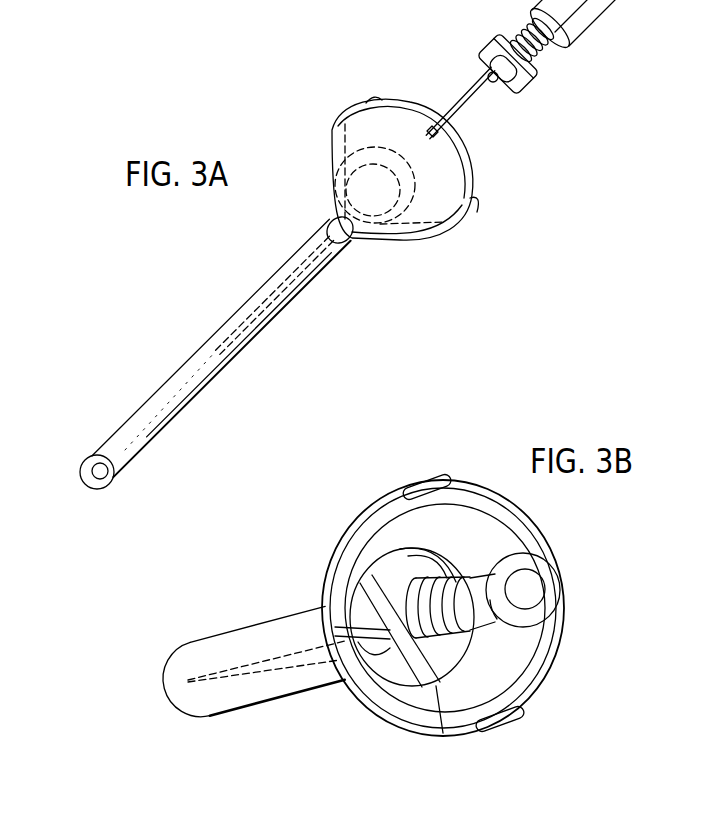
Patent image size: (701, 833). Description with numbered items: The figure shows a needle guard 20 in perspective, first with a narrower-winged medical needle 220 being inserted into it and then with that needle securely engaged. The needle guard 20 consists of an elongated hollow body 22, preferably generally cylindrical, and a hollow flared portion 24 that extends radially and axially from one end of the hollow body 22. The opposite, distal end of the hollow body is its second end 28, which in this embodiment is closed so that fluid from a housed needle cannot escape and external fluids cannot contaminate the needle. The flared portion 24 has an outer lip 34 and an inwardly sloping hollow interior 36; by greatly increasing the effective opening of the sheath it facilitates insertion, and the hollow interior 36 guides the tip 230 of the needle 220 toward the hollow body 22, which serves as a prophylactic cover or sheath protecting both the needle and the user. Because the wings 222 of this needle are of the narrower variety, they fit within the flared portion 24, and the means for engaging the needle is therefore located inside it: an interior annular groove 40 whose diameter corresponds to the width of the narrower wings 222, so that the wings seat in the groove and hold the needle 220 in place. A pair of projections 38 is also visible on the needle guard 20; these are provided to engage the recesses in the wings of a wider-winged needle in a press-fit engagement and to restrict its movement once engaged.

In FIG. 3A, the needle guard 20 is at (205, 266).
In FIG. 3B, the needle guard 20 is at (282, 732).
In FIG. 3A, the elongated hollow body 22 is at (207, 353).
In FIG. 3B, the elongated hollow body 22 is at (210, 655).
In FIG. 3A, the hollow flared portion 24 is at (313, 133).
In FIG. 3A, the second end 28 is at (95, 484).
In FIG. 3B, the second end 28 is at (160, 683).
In FIG. 3B, the outer lip 34 is at (497, 503).
In FIG. 3A, the hollow interior 36 is at (562, 32).
In FIG. 3B, the hollow interior 36 is at (487, 538).
In FIG. 3A, the projections 38 is at (368, 100).
In FIG. 3B, the projections 38 is at (418, 488).
In FIG. 3A, the interior annular groove 40 is at (418, 236).
In FIG. 3B, the interior annular groove 40 is at (443, 738).
In FIG. 3A, the narrower winged needle 220 is at (503, 118).
In FIG. 3B, the narrower winged needle 220 is at (366, 613).
In FIG. 3A, the narrower wings 222 is at (487, 48).
In FIG. 3B, the narrower wings 222 is at (393, 578).
In FIG. 3A, the tip 230 is at (263, 312).